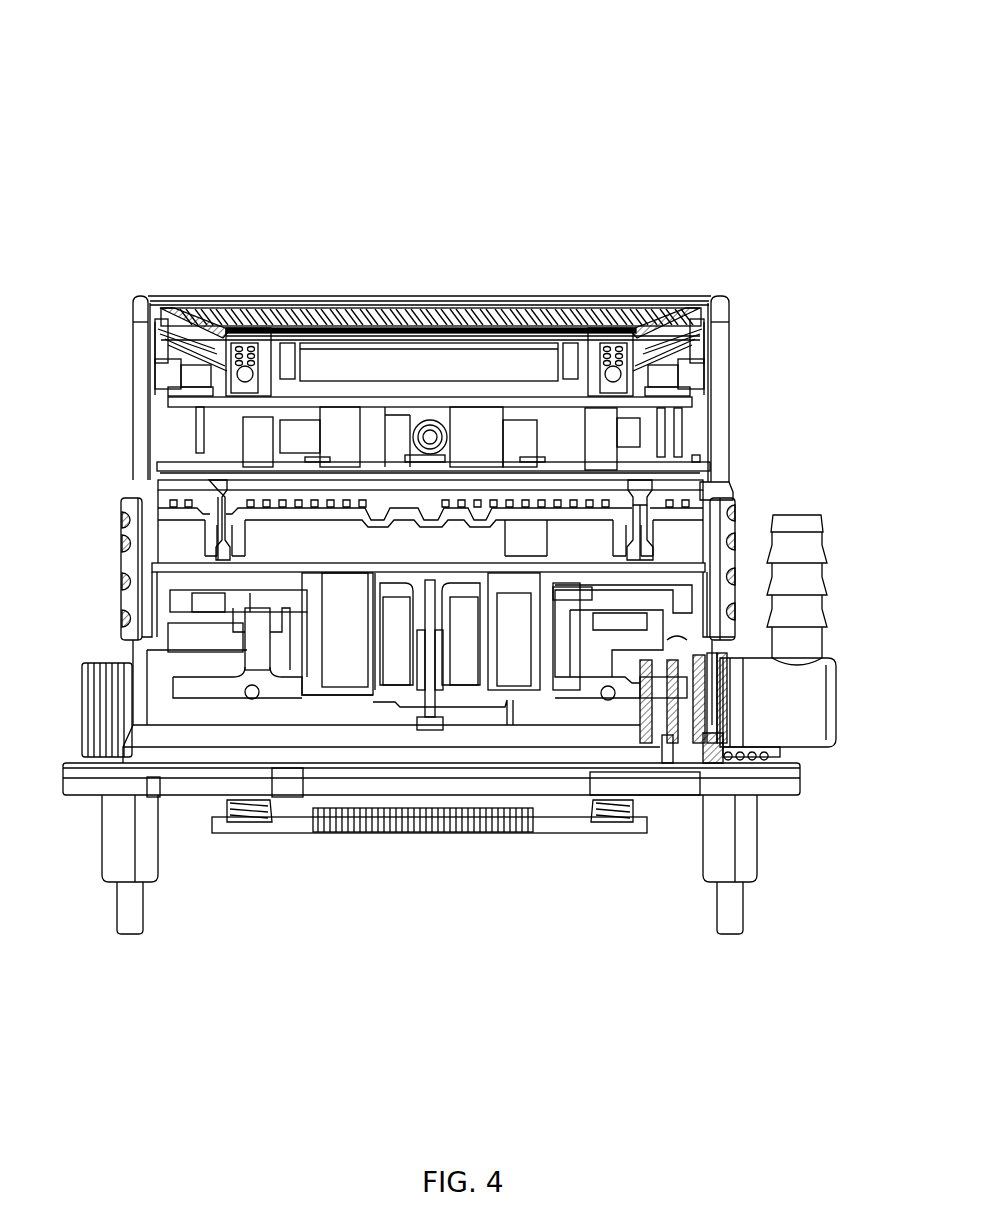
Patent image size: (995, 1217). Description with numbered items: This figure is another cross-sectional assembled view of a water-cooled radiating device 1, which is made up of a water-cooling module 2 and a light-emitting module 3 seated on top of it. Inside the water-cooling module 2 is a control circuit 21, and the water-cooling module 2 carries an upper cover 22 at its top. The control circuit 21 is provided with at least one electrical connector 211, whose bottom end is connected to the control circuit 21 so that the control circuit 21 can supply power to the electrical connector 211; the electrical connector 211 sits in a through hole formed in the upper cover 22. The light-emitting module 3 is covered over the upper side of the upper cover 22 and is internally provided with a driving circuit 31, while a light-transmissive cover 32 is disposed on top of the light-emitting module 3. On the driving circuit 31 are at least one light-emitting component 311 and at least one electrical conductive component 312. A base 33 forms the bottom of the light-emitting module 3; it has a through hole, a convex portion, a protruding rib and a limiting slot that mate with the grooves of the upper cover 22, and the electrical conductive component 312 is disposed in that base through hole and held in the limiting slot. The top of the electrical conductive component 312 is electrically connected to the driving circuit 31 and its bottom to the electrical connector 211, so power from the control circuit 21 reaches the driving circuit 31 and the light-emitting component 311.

The water-cooled radiating device 1 is at (157, 160).
The water-cooling module 2 is at (725, 564).
The light-emitting module 3 is at (717, 365).
The control circuit 21 is at (217, 563).
The upper cover 22 is at (167, 512).
The driving circuit 31 is at (194, 477).
The light-transmissive cover 32 is at (372, 325).
The base 33 is at (170, 497).
The electrical connector 211 is at (641, 548).
The light-emitting component 311 is at (422, 466).
The electrical conductive component 312 is at (640, 490).